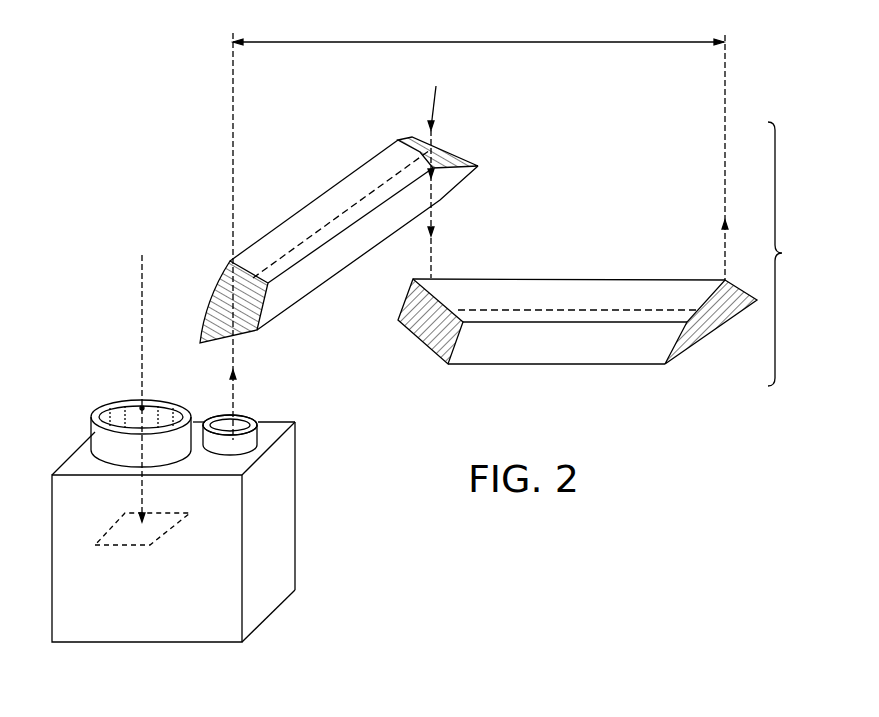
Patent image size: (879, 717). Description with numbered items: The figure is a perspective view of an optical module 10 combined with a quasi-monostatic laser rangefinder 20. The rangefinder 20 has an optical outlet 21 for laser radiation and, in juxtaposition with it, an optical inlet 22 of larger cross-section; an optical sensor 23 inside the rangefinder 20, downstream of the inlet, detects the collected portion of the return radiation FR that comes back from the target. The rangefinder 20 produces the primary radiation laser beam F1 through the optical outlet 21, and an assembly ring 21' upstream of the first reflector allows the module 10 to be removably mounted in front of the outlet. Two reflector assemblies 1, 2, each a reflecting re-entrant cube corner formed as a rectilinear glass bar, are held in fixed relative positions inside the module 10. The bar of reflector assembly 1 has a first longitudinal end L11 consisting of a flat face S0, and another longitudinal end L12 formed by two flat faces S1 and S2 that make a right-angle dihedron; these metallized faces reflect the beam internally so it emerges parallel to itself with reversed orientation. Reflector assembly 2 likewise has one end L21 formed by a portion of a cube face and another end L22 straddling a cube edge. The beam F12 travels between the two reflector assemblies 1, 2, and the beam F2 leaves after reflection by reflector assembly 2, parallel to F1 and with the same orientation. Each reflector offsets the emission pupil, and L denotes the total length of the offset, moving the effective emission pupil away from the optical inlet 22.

The reflector assembly 1 is at (342, 193).
The reflector assembly 2 is at (580, 293).
The optical module 10 is at (789, 254).
The laser rangefinder 20 is at (272, 538).
The optical outlet 21 is at (280, 444).
The assembly ring 21' is at (224, 397).
The optical inlet 22 is at (118, 400).
The optical sensor 23 is at (125, 513).
The total length of the offset L is at (479, 229).
The first longitudinal end L11 is at (432, 171).
The longitudinal end L12 is at (224, 262).
The end L21 is at (420, 352).
The end L22 is at (692, 364).
The flat face S0 is at (440, 141).
The flat face S1 is at (239, 303).
The flat face S2 is at (239, 303).
The primary radiation laser beam F1 is at (235, 396).
The laser beam F2 is at (724, 243).
The laser beam F12 is at (433, 254).
The return radiation FR is at (142, 286).